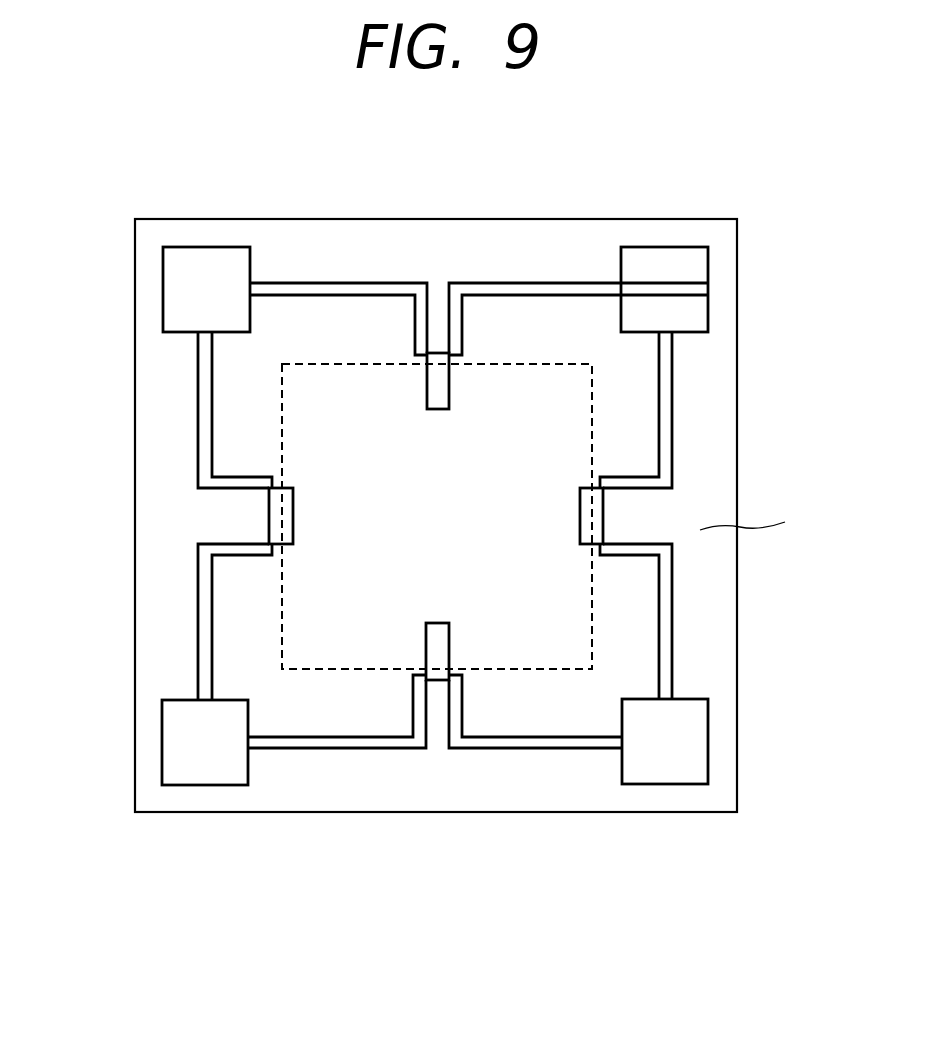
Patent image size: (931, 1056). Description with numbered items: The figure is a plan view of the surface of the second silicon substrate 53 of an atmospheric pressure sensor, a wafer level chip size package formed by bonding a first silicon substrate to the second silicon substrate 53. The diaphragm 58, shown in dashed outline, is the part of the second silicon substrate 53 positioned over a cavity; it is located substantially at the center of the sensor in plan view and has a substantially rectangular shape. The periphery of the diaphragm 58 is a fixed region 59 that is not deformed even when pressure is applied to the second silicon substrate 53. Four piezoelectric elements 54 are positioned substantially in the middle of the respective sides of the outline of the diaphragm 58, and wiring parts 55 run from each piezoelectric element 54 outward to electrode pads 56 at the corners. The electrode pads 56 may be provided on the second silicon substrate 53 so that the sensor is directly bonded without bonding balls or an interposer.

The second silicon substrate 53 is at (761, 528).
The piezoelectric element 54 is at (443, 387).
The wiring part 55 is at (343, 283).
The electrode pad 56 is at (172, 297).
The diaphragm 58 is at (545, 643).
The fixed region 59 is at (608, 787).